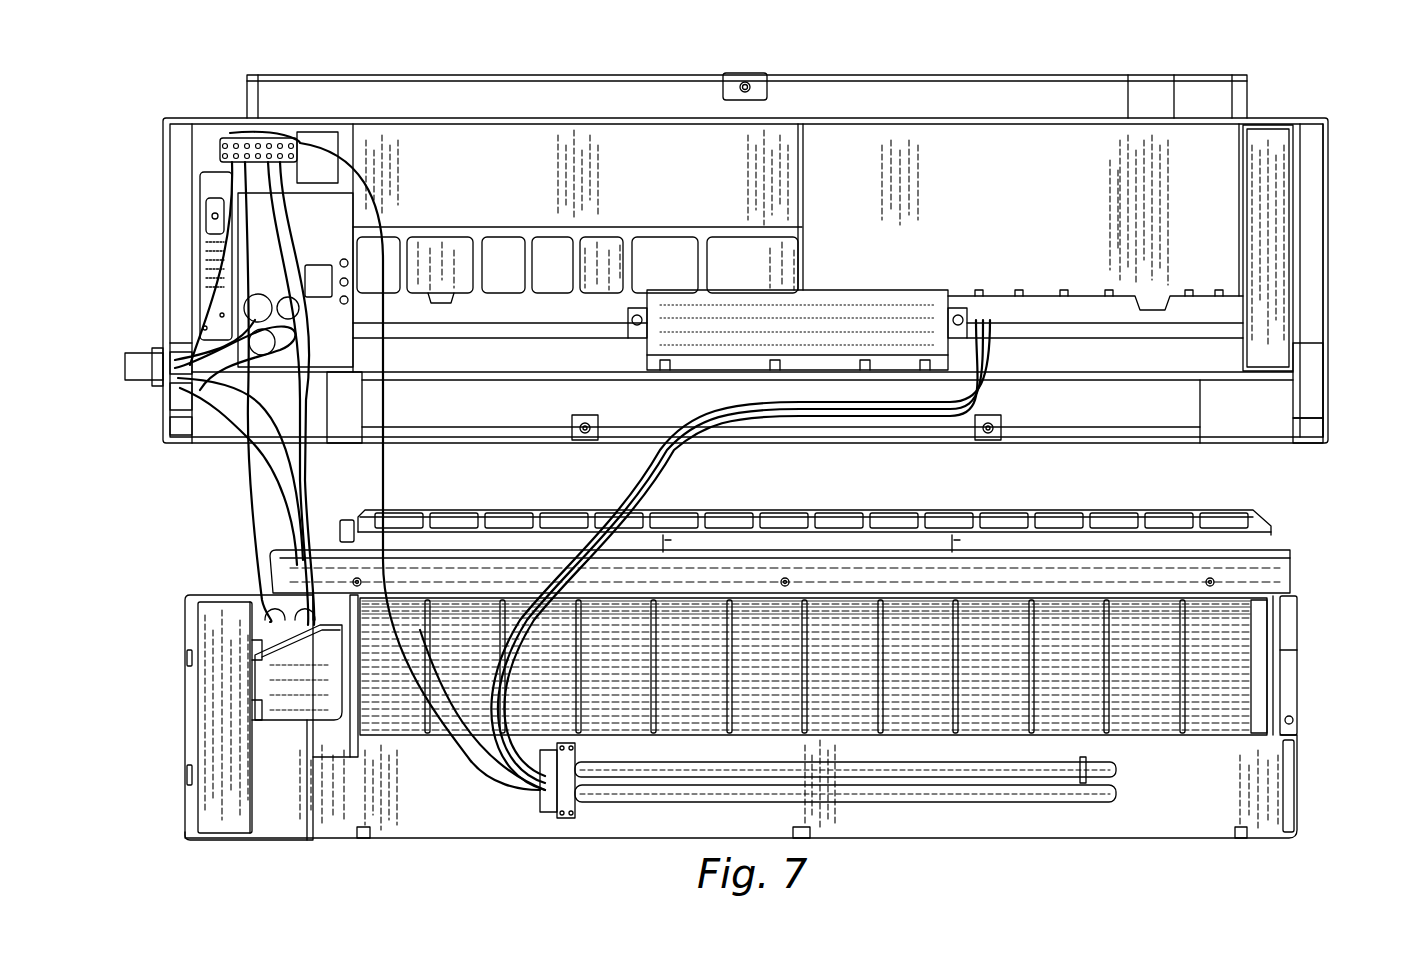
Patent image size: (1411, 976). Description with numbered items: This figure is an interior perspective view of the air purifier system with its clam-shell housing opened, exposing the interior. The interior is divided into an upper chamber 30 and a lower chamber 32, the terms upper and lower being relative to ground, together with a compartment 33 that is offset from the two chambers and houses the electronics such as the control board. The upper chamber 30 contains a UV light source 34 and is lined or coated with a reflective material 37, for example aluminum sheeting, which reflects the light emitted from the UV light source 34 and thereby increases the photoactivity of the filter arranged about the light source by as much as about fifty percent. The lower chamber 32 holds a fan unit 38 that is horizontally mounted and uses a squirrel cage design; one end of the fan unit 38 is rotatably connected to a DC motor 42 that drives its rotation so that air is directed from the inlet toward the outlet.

The upper chamber 30 is at (1330, 830).
The lower chamber 32 is at (1330, 585).
The compartment 33 is at (255, 800).
The UV light source 34 is at (976, 810).
The reflective material 37 is at (1054, 157).
The fan unit 38 is at (1067, 603).
The DC motor 42 is at (275, 695).